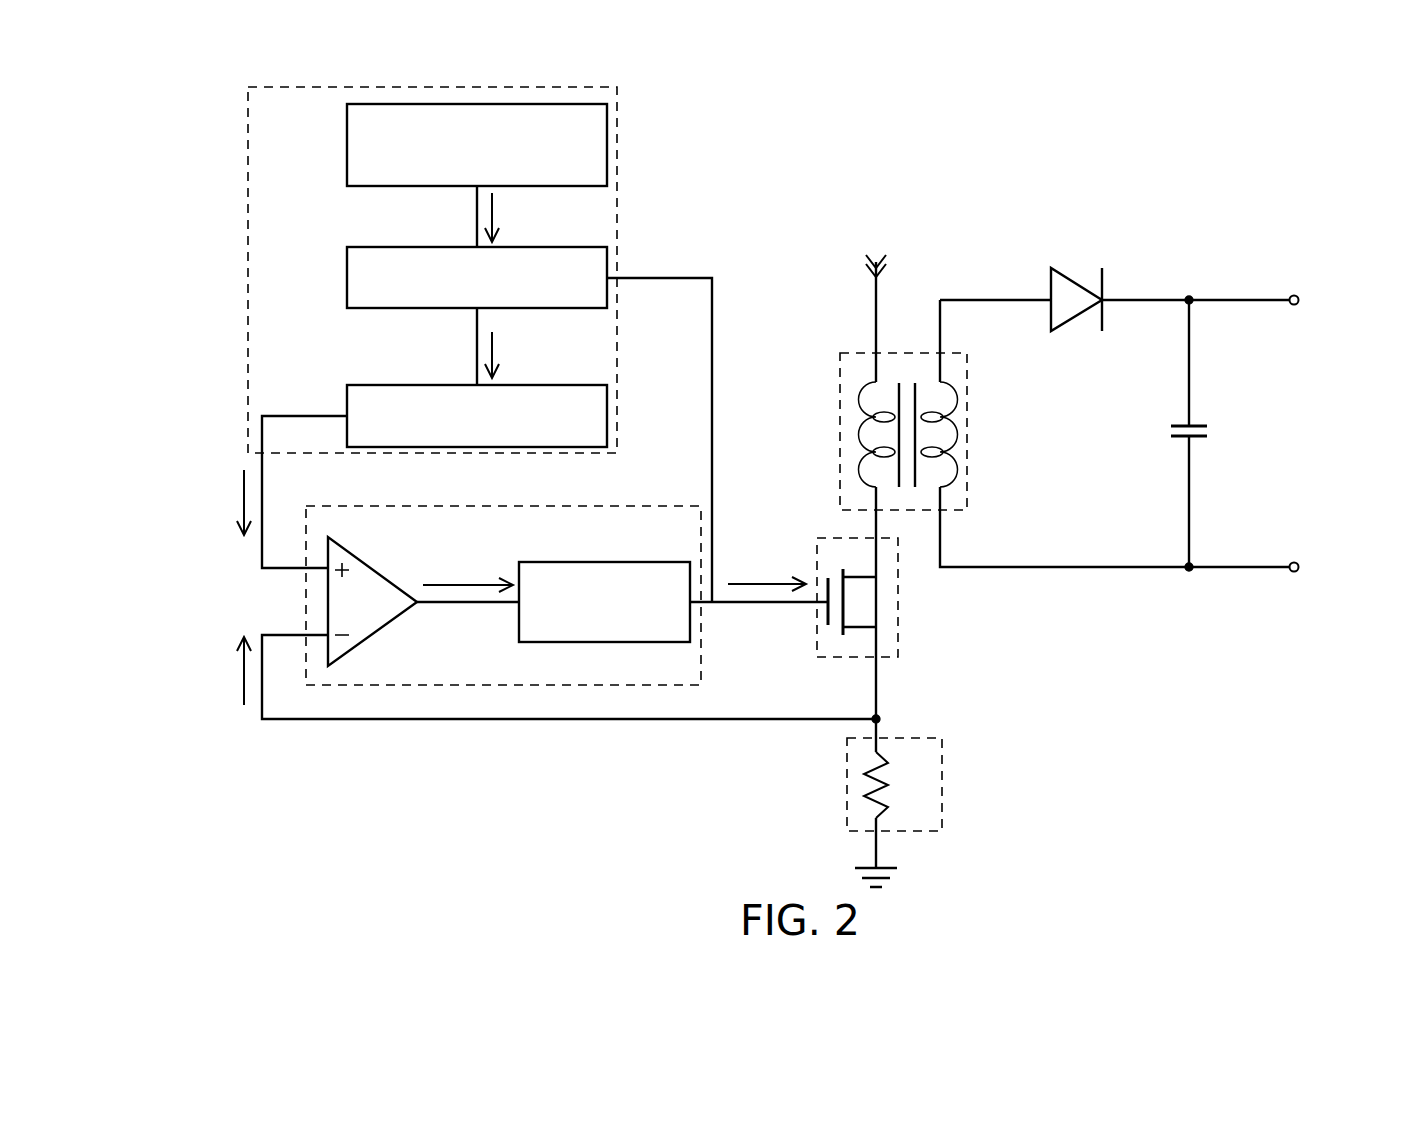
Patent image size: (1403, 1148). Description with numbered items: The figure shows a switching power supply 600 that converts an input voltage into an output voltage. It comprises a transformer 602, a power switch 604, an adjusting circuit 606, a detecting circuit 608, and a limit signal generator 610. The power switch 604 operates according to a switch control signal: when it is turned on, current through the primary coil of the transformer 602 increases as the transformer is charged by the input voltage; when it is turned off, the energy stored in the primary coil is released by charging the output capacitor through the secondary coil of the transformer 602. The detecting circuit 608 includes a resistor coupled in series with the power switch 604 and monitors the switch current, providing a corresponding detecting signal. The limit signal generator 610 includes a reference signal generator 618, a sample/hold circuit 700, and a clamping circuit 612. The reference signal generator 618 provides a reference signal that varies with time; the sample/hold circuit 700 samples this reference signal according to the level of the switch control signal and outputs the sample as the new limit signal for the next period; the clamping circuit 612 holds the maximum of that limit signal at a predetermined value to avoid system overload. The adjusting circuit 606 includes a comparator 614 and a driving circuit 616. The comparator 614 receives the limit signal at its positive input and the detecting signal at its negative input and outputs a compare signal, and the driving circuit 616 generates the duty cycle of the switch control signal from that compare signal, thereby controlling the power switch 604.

The switching power supply 600 is at (1250, 240).
The transformer 602 is at (840, 432).
The power switch 604 is at (898, 598).
The adjusting circuit 606 is at (603, 505).
The detecting circuit 608 is at (847, 790).
The limit signal generator 610 is at (248, 212).
The clamping circuit 612 is at (607, 418).
The comparator 614 is at (373, 637).
The driving circuit 616 is at (603, 562).
The reference signal generator 618 is at (347, 158).
The sample/hold circuit 700 is at (347, 280).